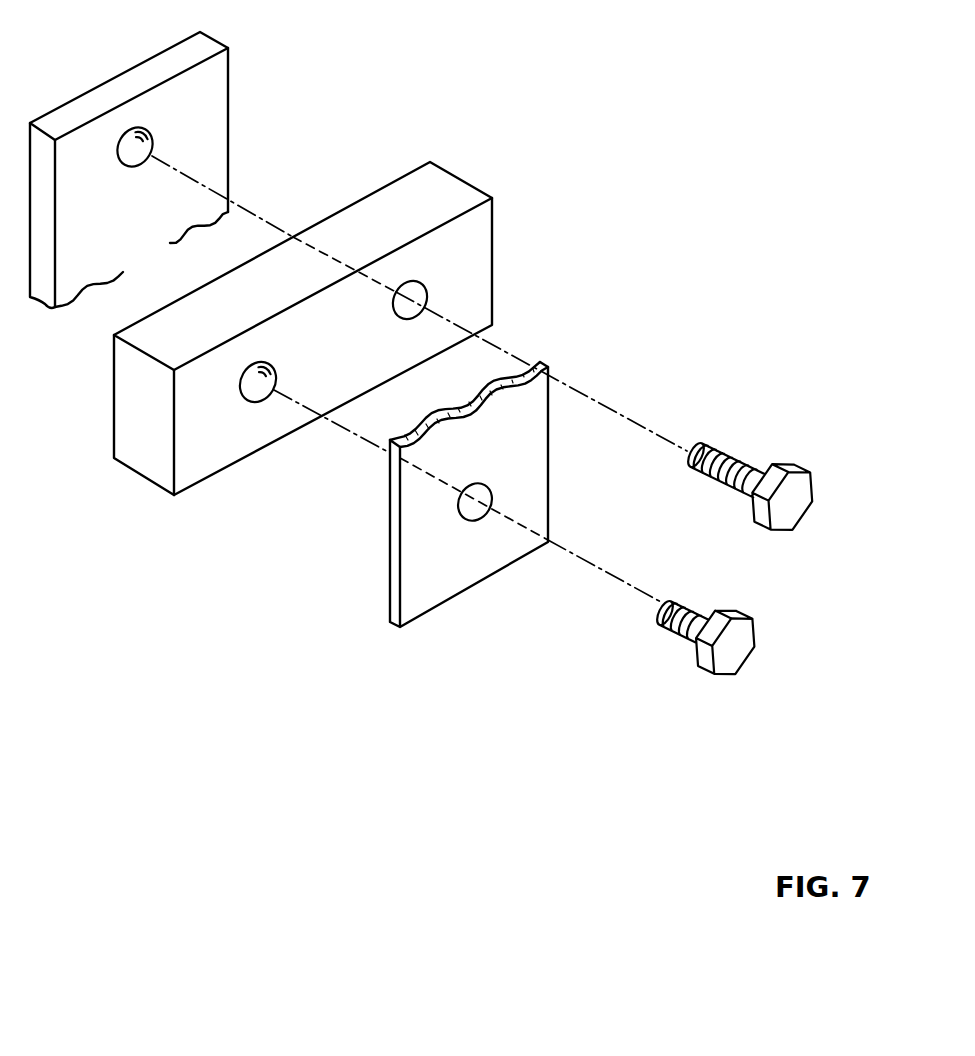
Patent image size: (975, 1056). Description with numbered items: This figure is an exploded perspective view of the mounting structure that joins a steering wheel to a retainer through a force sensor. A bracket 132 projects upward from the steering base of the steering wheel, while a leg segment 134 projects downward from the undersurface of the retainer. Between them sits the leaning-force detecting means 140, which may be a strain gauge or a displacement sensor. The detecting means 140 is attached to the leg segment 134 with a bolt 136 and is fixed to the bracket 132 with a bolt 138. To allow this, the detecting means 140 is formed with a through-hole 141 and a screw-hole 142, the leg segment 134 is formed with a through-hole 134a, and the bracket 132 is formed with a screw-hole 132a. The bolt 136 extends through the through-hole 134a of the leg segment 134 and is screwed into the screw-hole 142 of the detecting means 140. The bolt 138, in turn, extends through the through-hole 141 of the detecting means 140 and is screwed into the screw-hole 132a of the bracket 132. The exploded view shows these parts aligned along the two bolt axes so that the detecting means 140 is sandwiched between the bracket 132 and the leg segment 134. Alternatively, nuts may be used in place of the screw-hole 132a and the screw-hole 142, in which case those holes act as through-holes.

The bracket 132 is at (210, 87).
The screw-hole 132a is at (120, 142).
The leg segment 134 is at (435, 583).
The through-hole 134a is at (488, 482).
The bolt 136 is at (742, 647).
The bolt 138 is at (800, 490).
The leaning-force detecting means 140 is at (447, 183).
The through-hole 141 is at (422, 283).
The screw-hole 142 is at (260, 406).